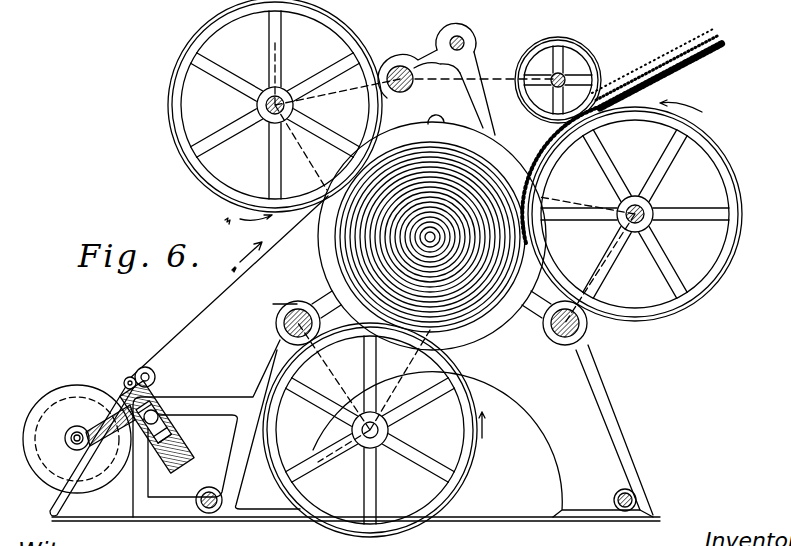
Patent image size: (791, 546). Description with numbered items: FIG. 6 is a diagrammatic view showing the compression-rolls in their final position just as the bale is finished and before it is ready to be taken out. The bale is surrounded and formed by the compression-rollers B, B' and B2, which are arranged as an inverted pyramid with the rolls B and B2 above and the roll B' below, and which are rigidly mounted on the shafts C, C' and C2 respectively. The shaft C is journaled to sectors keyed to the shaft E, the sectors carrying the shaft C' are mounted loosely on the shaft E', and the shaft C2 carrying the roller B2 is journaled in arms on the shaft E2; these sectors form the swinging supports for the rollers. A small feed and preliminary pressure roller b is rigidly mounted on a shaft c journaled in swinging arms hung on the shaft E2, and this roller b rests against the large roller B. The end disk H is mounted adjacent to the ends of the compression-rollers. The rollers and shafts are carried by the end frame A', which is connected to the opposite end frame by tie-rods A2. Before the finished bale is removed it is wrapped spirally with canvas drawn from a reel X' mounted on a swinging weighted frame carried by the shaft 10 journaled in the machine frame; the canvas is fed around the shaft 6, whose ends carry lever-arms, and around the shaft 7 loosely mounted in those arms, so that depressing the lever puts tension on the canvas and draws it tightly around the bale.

The left end frame A' is at (356, 406).
The tie-rods A2 is at (465, 43).
The compression-roller B is at (647, 215).
The compression-roller B' is at (370, 415).
The compression-roller B2 is at (170, 100).
The shaft C is at (655, 201).
The shaft C' is at (404, 432).
The shaft C2 is at (264, 112).
The shaft E is at (578, 329).
The shaft E' is at (279, 333).
The shaft E2 is at (401, 68).
The end disk H is at (449, 124).
The shaft c is at (565, 80).
The feed and preliminary pressure roller b is at (588, 74).
The reel X' is at (79, 424).
The shaft 6 is at (160, 398).
The shaft 7 is at (102, 434).
The shaft 10 is at (162, 412).